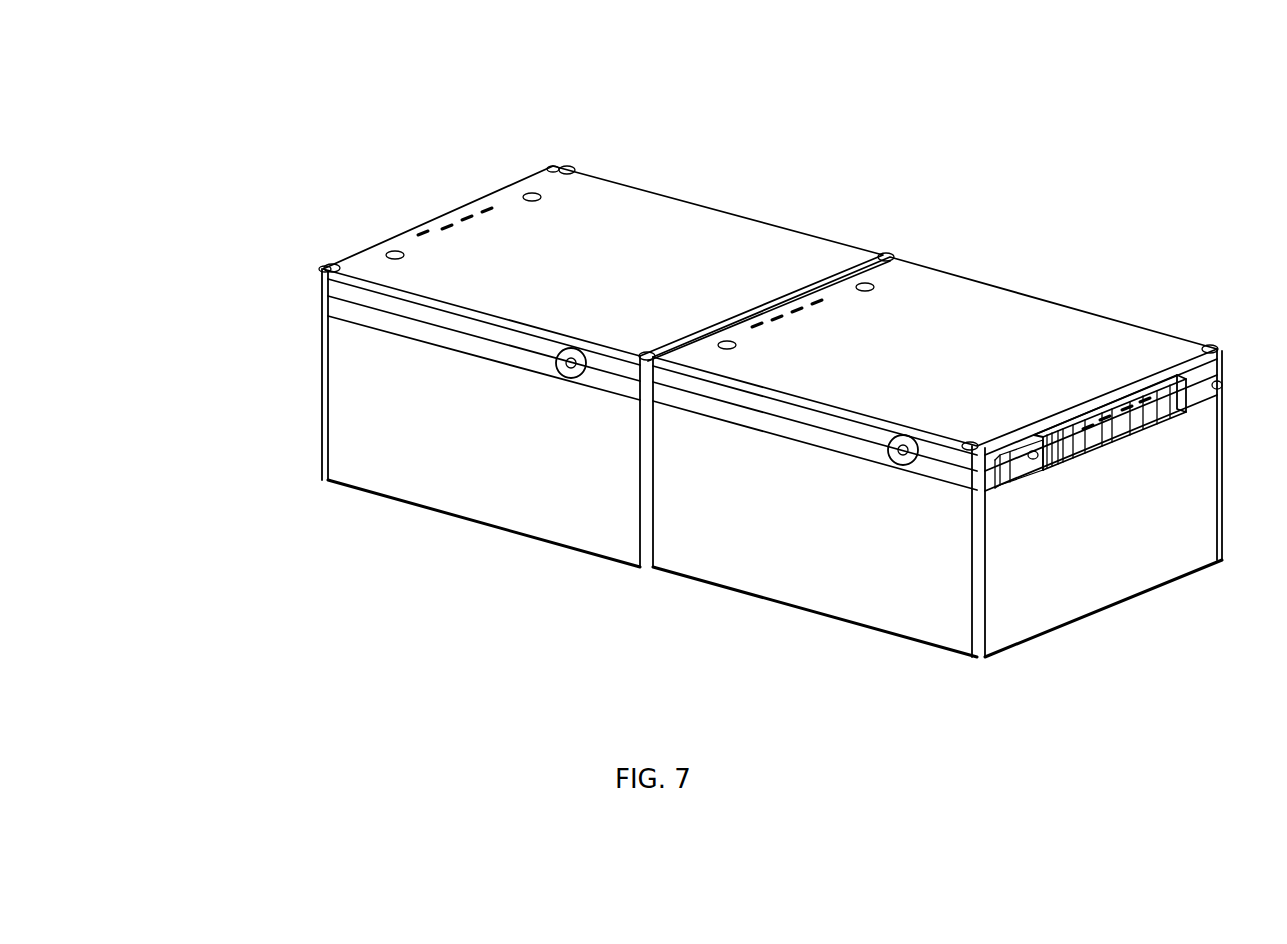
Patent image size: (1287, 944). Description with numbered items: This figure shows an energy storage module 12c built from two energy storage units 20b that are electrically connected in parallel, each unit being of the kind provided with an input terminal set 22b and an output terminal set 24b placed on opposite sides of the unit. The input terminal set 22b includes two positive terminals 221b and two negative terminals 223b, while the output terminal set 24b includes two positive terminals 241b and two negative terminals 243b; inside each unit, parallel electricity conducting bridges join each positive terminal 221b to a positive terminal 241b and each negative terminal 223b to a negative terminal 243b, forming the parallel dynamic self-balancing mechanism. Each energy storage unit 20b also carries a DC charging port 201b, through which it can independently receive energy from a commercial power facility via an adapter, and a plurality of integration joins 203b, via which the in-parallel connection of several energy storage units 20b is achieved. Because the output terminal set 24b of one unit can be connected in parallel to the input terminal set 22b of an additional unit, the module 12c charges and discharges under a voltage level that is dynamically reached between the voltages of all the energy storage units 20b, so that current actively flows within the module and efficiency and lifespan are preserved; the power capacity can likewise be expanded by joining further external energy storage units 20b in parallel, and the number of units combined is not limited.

The energy storage module 12c is at (1032, 120).
The energy storage unit 20b is at (460, 498).
The DC charging port 201b is at (557, 365).
The integration joins 203b is at (543, 172).
The input terminal set 22b is at (552, 77).
The positive terminals 221b is at (445, 227).
The negative terminals 223b is at (423, 232).
The output terminal set 24b is at (1218, 560).
The positive terminals 241b is at (1148, 445).
The negative terminals 243b is at (1022, 523).